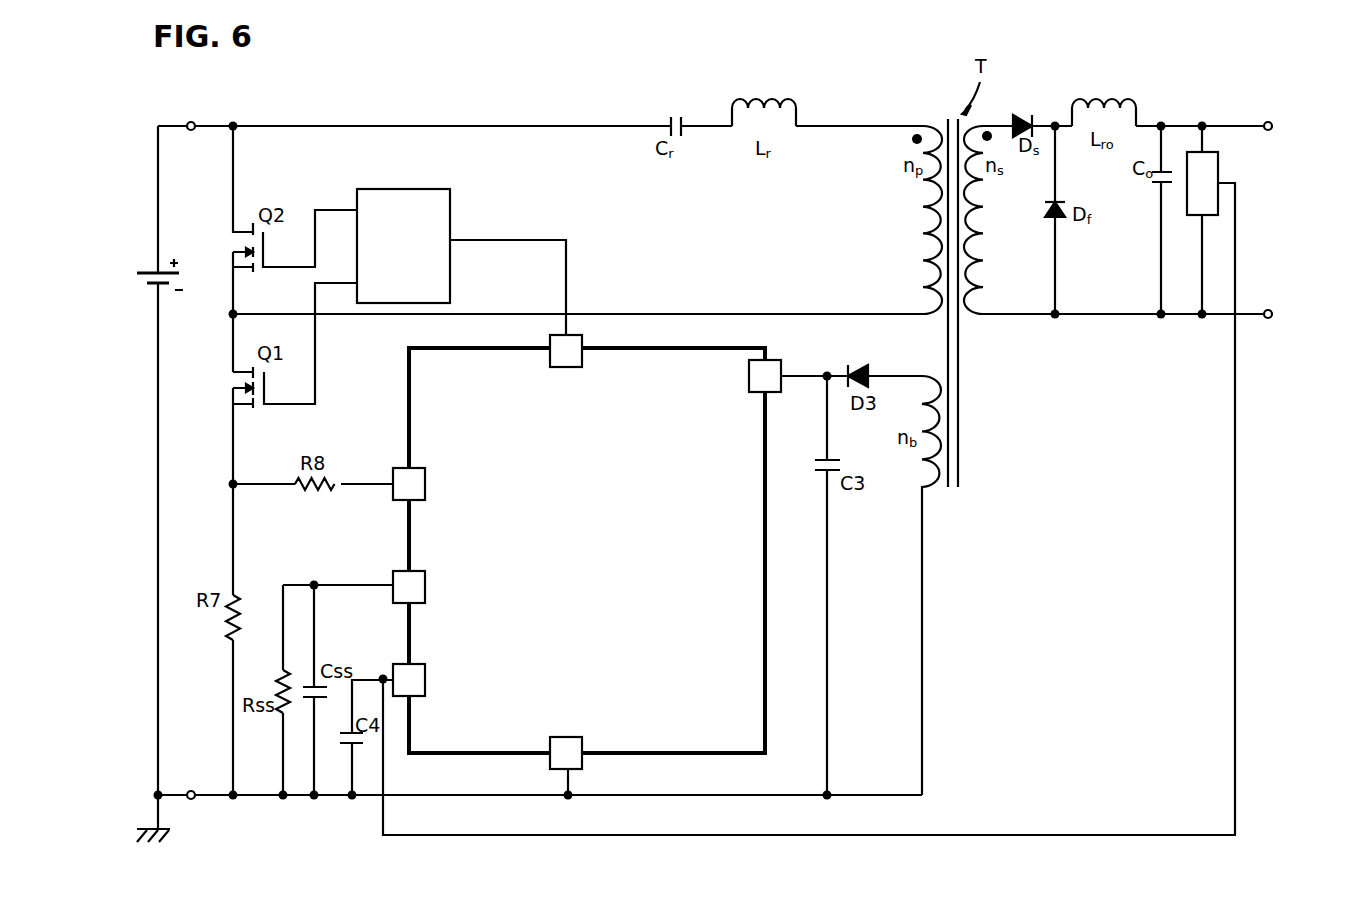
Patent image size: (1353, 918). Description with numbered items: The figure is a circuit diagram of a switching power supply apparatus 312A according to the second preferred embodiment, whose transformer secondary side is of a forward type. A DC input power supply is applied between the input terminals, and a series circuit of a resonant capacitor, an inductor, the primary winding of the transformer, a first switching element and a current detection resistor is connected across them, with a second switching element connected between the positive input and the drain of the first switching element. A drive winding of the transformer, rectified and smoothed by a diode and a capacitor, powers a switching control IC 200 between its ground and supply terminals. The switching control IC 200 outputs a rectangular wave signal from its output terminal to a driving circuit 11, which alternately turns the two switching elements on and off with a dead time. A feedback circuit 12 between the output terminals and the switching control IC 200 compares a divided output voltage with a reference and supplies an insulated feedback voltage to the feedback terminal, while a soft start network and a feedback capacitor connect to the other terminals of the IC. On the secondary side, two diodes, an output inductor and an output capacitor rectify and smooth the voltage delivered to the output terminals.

The driving circuit 11 is at (420, 189).
The feedback circuit 12 is at (1220, 160).
The switching control IC 200 is at (665, 348).
The switching power supply apparatus 312A is at (1246, 88).